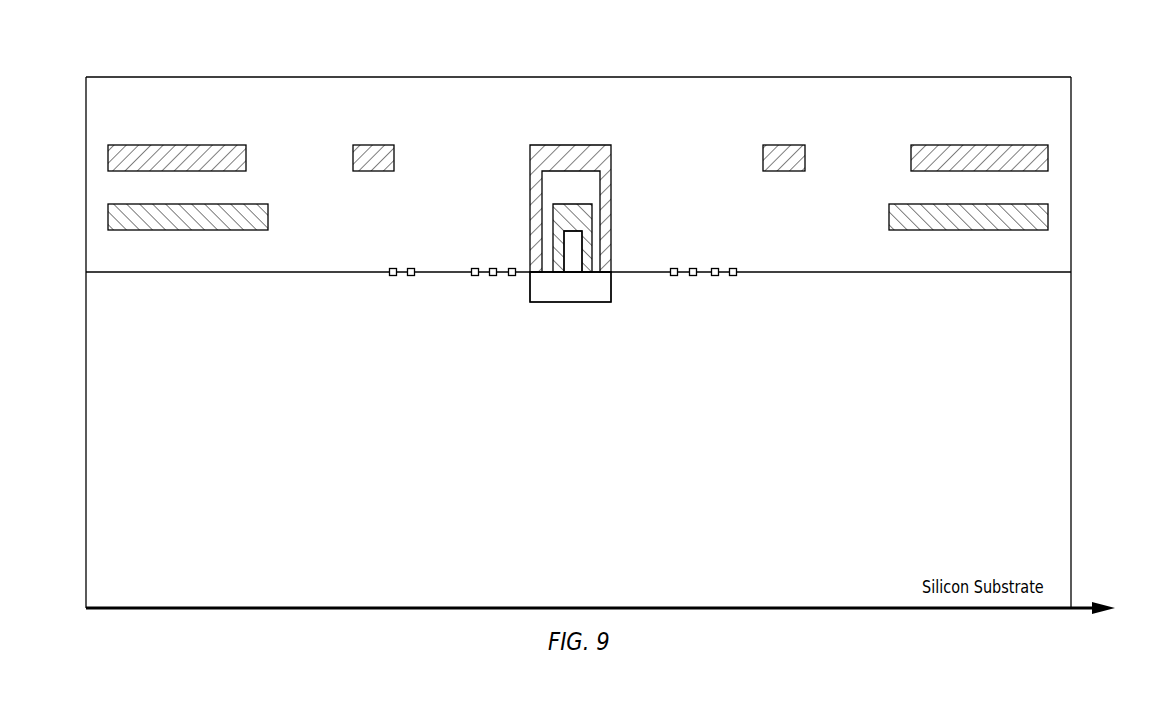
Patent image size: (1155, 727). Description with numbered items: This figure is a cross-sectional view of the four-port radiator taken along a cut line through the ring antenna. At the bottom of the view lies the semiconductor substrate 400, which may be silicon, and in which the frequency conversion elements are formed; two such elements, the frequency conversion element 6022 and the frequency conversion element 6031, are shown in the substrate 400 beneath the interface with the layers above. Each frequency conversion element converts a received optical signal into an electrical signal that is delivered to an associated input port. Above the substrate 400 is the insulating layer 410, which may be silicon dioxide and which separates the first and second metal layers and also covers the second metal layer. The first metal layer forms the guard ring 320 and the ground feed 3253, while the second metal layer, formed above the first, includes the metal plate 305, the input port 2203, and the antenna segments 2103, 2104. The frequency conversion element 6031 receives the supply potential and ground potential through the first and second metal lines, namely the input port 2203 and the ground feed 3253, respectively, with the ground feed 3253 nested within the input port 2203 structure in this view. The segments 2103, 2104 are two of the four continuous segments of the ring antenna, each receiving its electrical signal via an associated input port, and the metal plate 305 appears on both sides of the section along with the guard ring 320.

The semiconductor substrate 400 is at (1071, 439).
The insulating layer 410 is at (1071, 188).
The metal plate 305 is at (163, 144).
The guard ring 320 is at (179, 231).
The segment of ring antenna 2103 is at (373, 144).
The segment of ring antenna 2104 is at (781, 143).
The input port 2203 is at (575, 144).
The ground feed 3253 is at (588, 203).
The frequency conversion element 6022 is at (548, 303).
The frequency conversion element 6031 is at (595, 303).